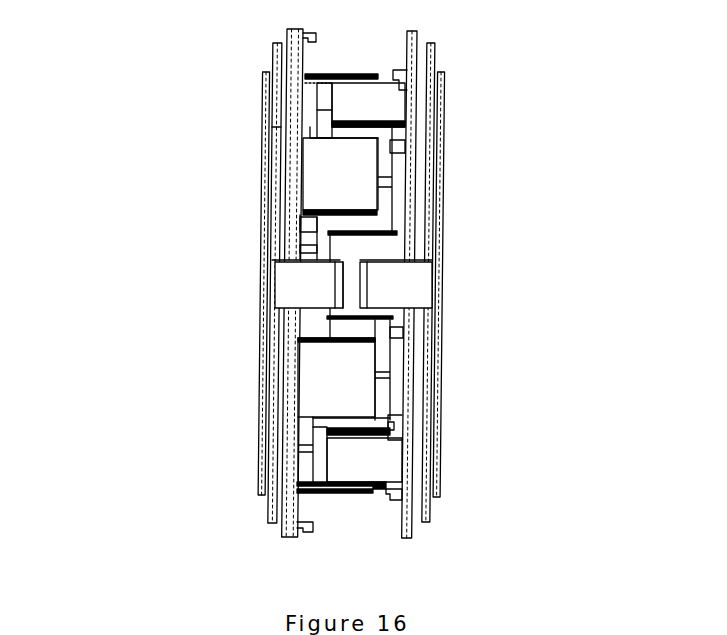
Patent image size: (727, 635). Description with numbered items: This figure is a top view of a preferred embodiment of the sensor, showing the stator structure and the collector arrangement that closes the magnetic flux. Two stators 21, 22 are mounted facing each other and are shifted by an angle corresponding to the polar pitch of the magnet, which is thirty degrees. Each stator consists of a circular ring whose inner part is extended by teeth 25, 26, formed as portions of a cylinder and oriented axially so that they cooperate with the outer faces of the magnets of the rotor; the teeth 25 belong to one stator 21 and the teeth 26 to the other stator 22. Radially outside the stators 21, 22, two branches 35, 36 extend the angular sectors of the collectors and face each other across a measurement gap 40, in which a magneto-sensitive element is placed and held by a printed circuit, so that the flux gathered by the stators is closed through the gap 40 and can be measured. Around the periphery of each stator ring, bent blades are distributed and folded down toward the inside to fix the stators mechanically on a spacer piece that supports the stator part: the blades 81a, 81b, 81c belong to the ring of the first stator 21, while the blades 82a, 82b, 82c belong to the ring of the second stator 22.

The stator 21 is at (303, 33).
The stator 22 is at (423, 38).
The teeth 25 is at (323, 185).
The teeth 26 is at (383, 103).
The branch 35 is at (297, 290).
The branch 36 is at (408, 282).
The measurement gap 40 is at (353, 290).
The bent blade 81a is at (312, 532).
The bent blade 81b is at (303, 236).
The bent blade 81c is at (313, 42).
The bent blade 82a is at (398, 500).
The bent blade 82b is at (398, 428).
The bent blade 82c is at (402, 82).